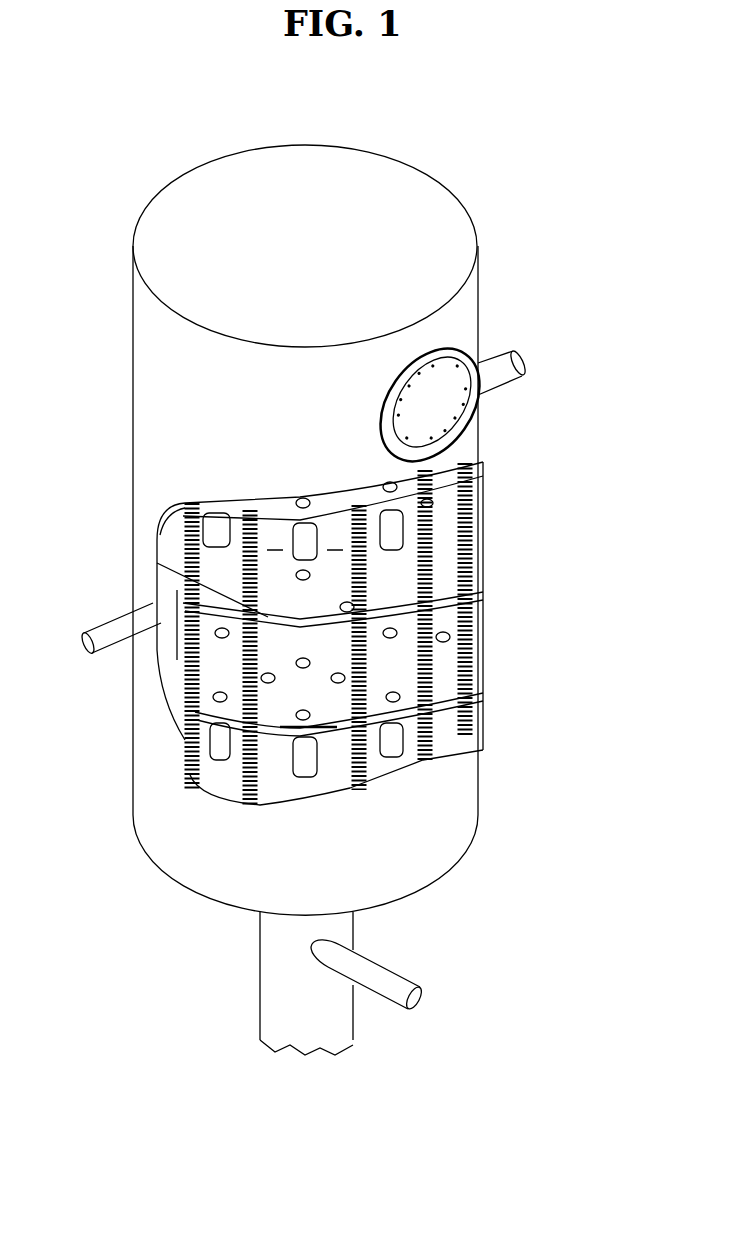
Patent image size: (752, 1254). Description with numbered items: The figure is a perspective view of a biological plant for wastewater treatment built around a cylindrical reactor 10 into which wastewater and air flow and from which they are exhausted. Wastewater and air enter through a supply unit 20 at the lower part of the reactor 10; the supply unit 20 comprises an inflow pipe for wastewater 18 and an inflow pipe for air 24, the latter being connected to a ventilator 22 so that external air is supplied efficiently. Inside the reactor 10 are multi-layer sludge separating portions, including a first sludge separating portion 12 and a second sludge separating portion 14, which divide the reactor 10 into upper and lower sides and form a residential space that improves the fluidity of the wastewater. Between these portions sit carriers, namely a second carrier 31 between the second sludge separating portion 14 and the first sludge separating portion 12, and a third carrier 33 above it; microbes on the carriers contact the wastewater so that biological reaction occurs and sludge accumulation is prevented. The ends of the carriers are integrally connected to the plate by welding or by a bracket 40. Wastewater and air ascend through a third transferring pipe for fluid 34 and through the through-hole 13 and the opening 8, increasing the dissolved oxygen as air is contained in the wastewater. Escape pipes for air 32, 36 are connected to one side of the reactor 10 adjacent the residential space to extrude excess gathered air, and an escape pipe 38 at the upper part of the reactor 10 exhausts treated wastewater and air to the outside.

The manway flange 8 is at (472, 345).
The reactor 10 is at (500, 323).
The first sludge separating portion 12 is at (478, 643).
The perforation holes 13 is at (301, 496).
The second sludge separating portion 14 is at (477, 537).
The inflow pipe for wastewater 18 is at (262, 977).
The supply unit 20 is at (423, 762).
The ventilator 22 is at (84, 645).
The inflow pipe for air 24 is at (422, 990).
The second carrier 31 is at (479, 588).
The escape pipe for air 32 is at (153, 562).
The third carrier 33 is at (445, 518).
The third transferring pipe for fluid 34 is at (173, 540).
The escape pipe for air 36 is at (173, 663).
The escape pipe 38 is at (526, 356).
The bracket 40 is at (440, 700).